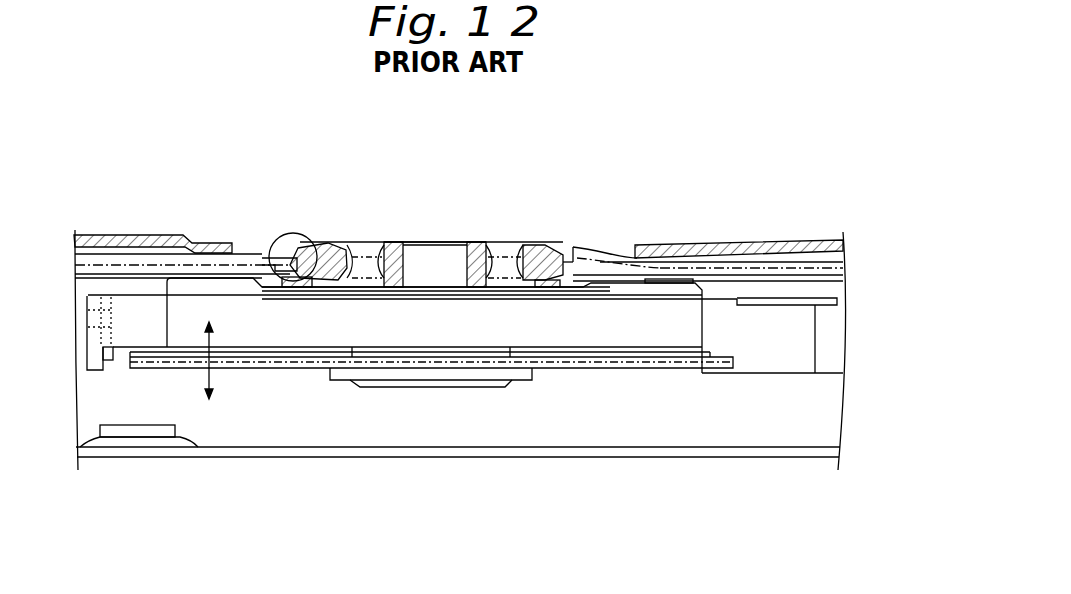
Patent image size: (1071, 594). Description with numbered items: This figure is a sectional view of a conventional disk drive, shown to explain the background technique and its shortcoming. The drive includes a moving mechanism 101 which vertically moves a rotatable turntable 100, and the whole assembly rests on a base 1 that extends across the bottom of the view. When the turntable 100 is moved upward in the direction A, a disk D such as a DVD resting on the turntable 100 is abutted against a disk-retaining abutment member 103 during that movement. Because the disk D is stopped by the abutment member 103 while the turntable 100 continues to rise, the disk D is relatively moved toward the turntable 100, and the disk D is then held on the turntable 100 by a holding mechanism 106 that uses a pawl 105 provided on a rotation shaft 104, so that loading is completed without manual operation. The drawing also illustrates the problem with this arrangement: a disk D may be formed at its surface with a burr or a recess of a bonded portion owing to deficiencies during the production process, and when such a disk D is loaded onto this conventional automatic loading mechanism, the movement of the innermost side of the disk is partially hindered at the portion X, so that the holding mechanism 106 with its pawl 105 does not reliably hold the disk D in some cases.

The base plate 1 is at (627, 457).
The turntable 100 is at (658, 346).
The moving mechanism 101 is at (825, 368).
The disk-retaining abutment member 103 is at (212, 233).
The rotation shaft 104 is at (482, 242).
The pawl 105 is at (332, 238).
The holding mechanism 106 is at (550, 242).
The disk D is at (620, 260).
The portion X is at (278, 228).
The direction A is at (196, 354).